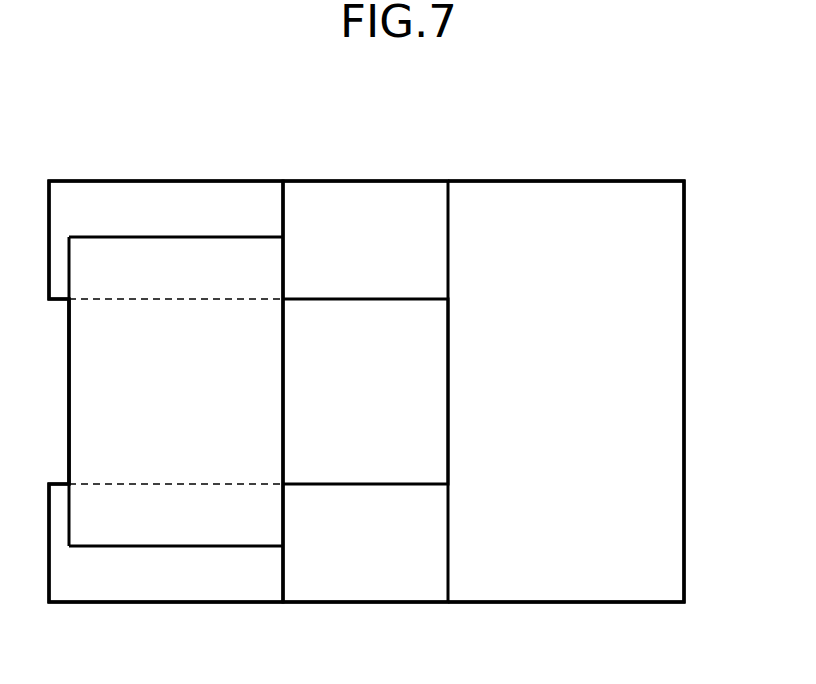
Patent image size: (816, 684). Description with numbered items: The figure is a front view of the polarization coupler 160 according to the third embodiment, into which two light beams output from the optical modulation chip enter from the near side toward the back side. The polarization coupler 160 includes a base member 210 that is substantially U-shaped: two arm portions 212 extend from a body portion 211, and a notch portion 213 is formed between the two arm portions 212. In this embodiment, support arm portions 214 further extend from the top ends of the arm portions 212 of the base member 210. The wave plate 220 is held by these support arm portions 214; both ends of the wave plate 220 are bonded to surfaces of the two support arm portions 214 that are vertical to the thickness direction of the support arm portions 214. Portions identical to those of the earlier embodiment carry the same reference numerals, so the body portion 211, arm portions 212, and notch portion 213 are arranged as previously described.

The polarization coupler 160 is at (676, 139).
The base member 210 is at (684, 291).
The body portion 211 is at (683, 170).
The arm portion 212 is at (285, 170).
The notch portion 213 is at (390, 462).
The support arm portion 214 is at (48, 170).
The wave plate 220 is at (163, 546).